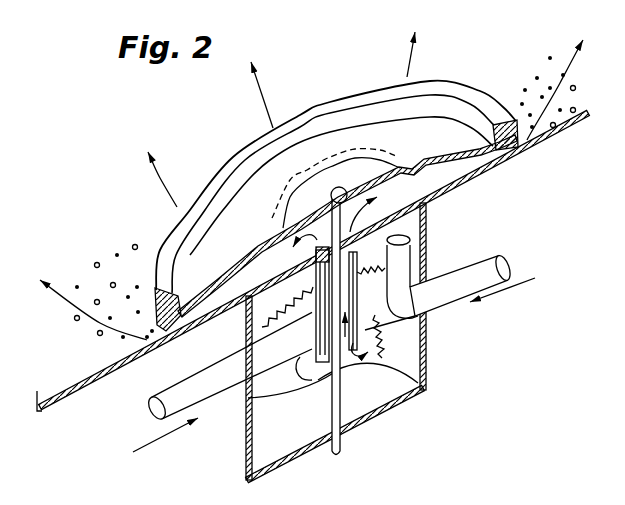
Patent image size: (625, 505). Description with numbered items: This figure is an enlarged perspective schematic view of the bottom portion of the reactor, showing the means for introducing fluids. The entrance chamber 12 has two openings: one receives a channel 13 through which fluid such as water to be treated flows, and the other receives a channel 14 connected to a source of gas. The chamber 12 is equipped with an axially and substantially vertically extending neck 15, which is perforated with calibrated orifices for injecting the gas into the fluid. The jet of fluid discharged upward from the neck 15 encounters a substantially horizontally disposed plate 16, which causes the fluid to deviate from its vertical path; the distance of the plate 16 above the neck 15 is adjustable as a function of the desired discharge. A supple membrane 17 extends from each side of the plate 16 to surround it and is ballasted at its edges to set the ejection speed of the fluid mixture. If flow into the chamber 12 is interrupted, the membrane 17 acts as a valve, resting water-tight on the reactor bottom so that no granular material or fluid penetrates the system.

The entrance chamber 12 is at (422, 372).
The channel 13 is at (207, 384).
The channel 14 is at (496, 258).
The neck 15 is at (316, 335).
The plate 16 is at (352, 182).
The supple membrane 17 is at (445, 156).